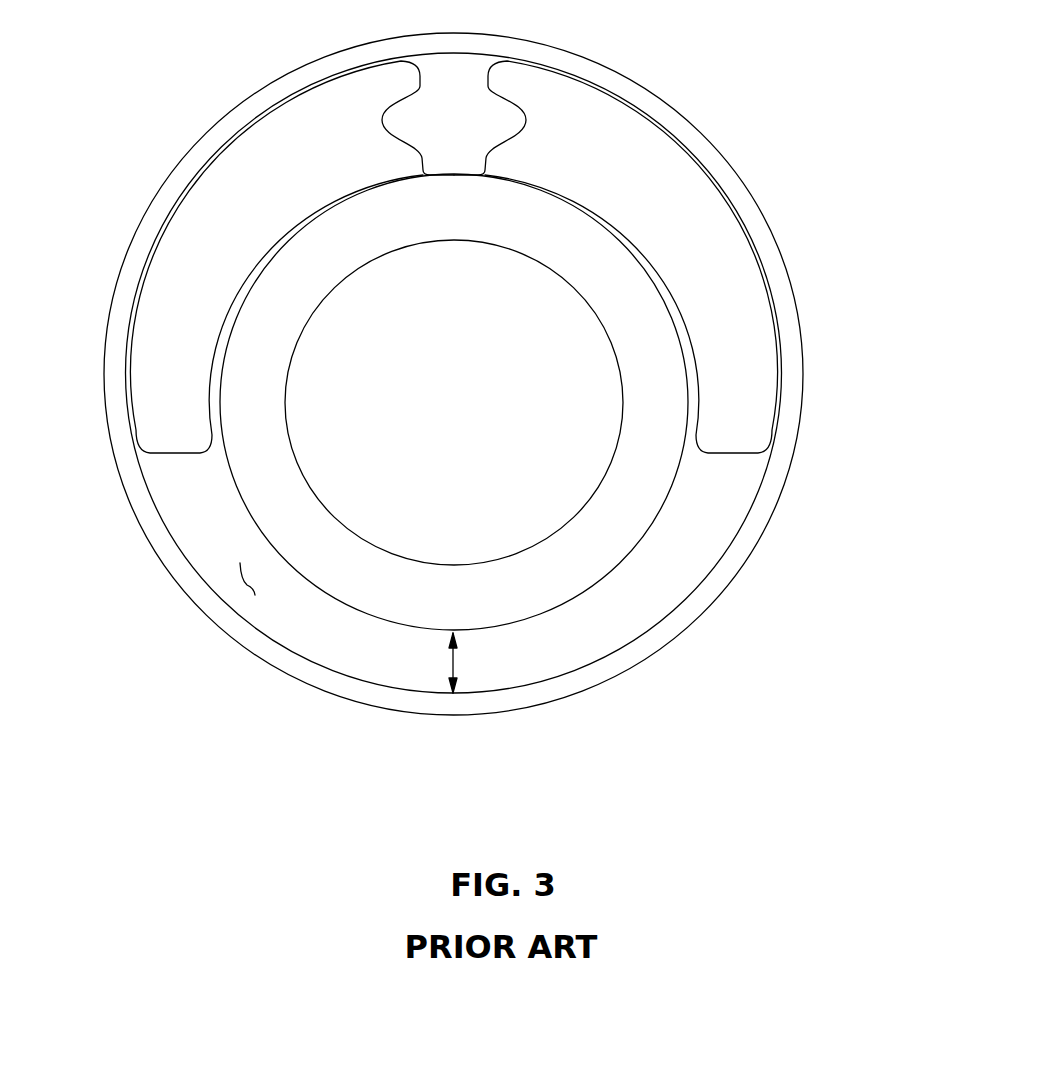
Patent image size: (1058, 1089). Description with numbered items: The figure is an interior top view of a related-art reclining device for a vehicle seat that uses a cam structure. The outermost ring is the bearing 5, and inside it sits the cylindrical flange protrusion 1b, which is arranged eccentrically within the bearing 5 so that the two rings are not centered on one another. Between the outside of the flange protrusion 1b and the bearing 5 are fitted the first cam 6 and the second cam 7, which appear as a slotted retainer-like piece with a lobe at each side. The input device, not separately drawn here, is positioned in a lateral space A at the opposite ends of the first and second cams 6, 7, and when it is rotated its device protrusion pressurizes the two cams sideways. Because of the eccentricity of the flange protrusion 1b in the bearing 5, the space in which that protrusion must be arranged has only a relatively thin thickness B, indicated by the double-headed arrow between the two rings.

The bearing 5 is at (790, 318).
The first cam 6 is at (222, 207).
The second cam 7 is at (672, 200).
The flange protrusion 1b is at (612, 532).
The lateral space A is at (245, 577).
The thin thickness B is at (455, 663).